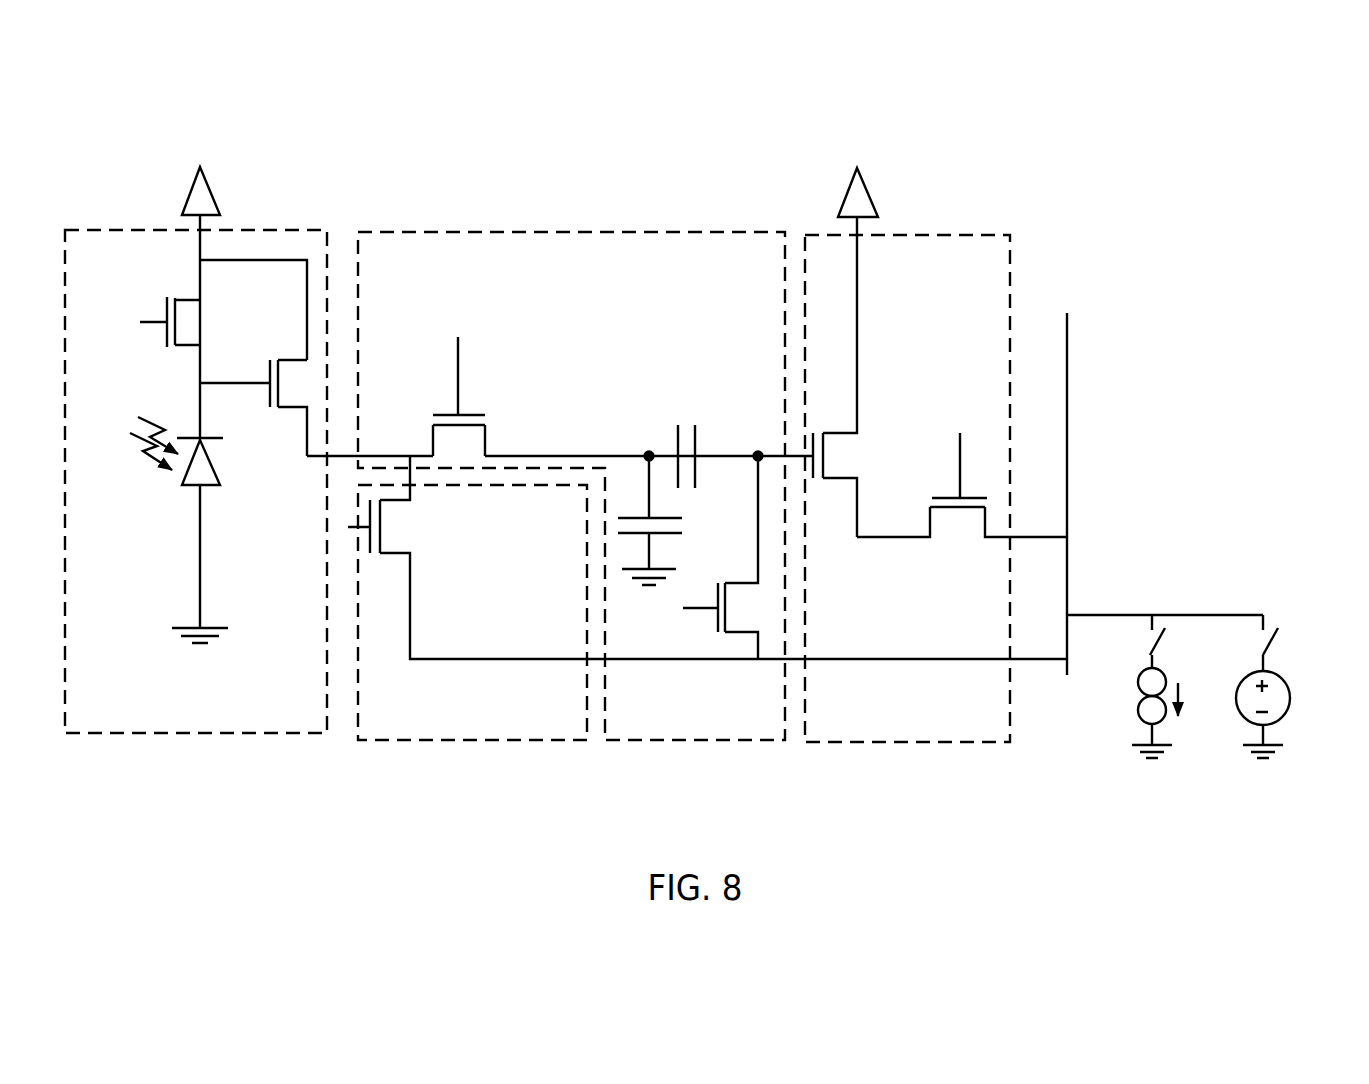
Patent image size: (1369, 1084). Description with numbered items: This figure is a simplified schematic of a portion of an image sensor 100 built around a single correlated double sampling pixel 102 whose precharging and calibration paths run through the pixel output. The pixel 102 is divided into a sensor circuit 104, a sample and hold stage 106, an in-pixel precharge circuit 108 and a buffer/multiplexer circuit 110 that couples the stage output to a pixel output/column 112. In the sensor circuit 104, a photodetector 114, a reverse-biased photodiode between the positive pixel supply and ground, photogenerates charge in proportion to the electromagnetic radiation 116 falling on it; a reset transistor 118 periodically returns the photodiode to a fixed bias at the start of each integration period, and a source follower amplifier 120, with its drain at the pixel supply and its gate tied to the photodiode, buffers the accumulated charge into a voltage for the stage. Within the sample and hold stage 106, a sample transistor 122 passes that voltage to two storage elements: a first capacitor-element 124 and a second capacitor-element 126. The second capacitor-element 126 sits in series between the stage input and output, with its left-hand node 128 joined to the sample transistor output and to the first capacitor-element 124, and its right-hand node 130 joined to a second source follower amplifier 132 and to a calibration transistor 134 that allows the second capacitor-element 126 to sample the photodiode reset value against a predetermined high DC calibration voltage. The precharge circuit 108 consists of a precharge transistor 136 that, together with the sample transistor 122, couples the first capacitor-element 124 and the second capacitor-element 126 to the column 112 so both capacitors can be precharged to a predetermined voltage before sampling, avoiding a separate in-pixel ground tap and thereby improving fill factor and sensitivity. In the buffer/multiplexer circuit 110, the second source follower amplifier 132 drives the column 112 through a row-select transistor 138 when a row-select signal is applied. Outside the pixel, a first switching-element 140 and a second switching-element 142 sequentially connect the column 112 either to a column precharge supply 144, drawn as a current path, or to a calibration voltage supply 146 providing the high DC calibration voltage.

The image sensor 100 is at (566, 441).
The CDS pixel 102 is at (1024, 231).
The sensor circuit 104 is at (196, 441).
The sample and hold (S/H) stage 106 is at (571, 486).
The precharge circuit 108 is at (661, 598).
The buffer/multiplexer circuit 110 is at (936, 441).
The pixel output/column 112 is at (1068, 350).
The photodetector 114 is at (221, 456).
The electromagnetic radiation 116 is at (145, 447).
The reset transistor 118 is at (152, 298).
The source follower amplifier 120 is at (258, 368).
The sample transistor 122 is at (440, 402).
The capacitor-element C1 124 is at (626, 517).
The capacitor-element C2 126 is at (698, 432).
The node 128 is at (647, 453).
The node 130 is at (753, 459).
The second source follower amplifier 132 is at (865, 456).
The calibration transistor 134 is at (742, 650).
The precharge transistor 136 is at (372, 562).
The row-select transistor 138 is at (956, 545).
The switching-element 140 is at (1133, 639).
The switching-element 142 is at (1255, 637).
The column precharge supply 144 is at (1138, 706).
The Vcalib supply 146 is at (1275, 728).